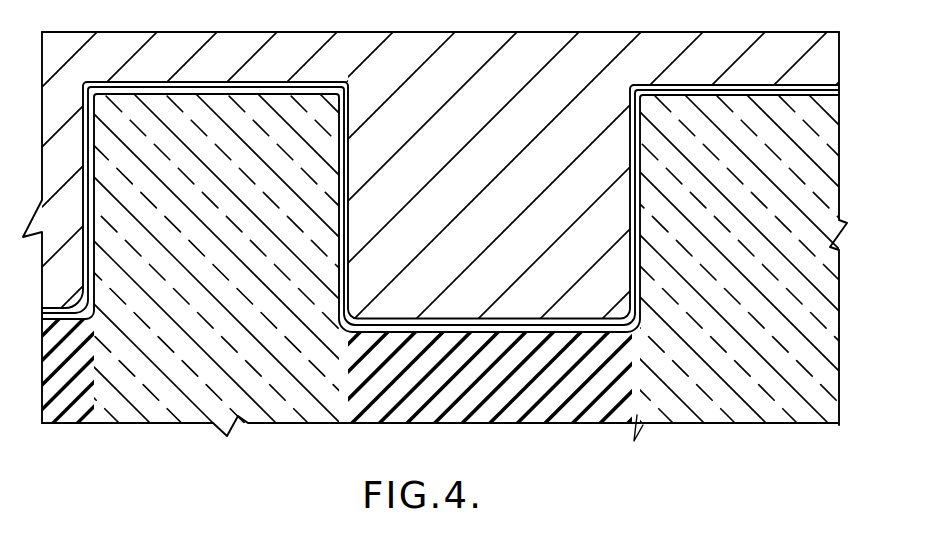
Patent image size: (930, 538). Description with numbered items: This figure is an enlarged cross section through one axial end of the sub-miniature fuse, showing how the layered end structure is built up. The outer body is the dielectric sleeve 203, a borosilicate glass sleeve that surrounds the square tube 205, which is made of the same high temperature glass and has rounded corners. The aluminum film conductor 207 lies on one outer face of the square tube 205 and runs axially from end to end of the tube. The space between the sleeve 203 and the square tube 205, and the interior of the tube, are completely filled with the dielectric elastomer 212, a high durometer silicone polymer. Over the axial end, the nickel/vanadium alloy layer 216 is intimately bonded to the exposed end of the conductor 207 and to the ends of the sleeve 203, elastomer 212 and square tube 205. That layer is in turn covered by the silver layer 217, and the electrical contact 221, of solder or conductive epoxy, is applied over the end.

The dielectric sleeve 203 is at (742, 419).
The square tube 205 is at (195, 412).
The aluminum film conductor 207 is at (352, 115).
The dielectric elastomer 212 is at (87, 413).
The nickel/vanadium alloy layer 216 is at (270, 82).
The silver layer 217 is at (317, 84).
The electrical contact 221 is at (529, 61).